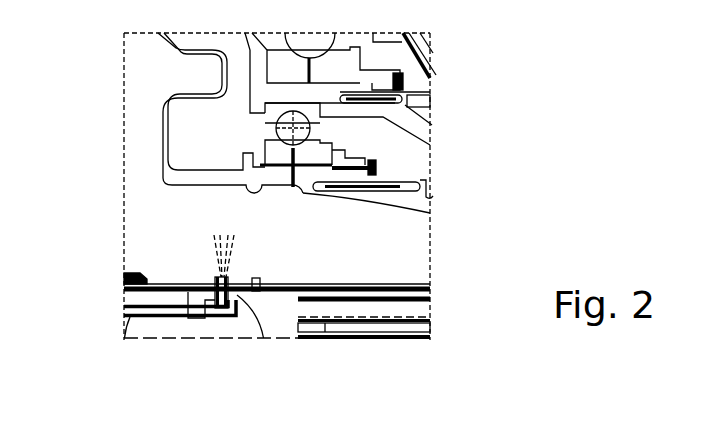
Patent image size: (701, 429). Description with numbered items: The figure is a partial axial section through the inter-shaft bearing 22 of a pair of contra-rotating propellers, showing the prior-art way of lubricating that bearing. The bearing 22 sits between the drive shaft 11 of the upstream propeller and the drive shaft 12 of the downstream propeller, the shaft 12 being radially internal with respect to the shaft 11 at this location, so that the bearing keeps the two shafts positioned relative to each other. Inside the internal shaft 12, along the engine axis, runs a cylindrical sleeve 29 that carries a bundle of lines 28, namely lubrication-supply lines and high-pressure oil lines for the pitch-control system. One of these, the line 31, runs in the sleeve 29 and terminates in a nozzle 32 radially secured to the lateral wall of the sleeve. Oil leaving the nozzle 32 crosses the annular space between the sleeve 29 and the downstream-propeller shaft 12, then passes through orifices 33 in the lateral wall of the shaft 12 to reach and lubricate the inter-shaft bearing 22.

The drive shaft of the upstream propeller 11 is at (407, 95).
The drive shaft of the downstream propeller 12 is at (428, 193).
The inter-shaft bearing 22 is at (240, 133).
The lines 28 is at (444, 290).
The cylindrical sleeve 29 is at (124, 290).
The line 31 is at (140, 314).
The nozzle 32 is at (253, 313).
The orifices 33 is at (294, 186).